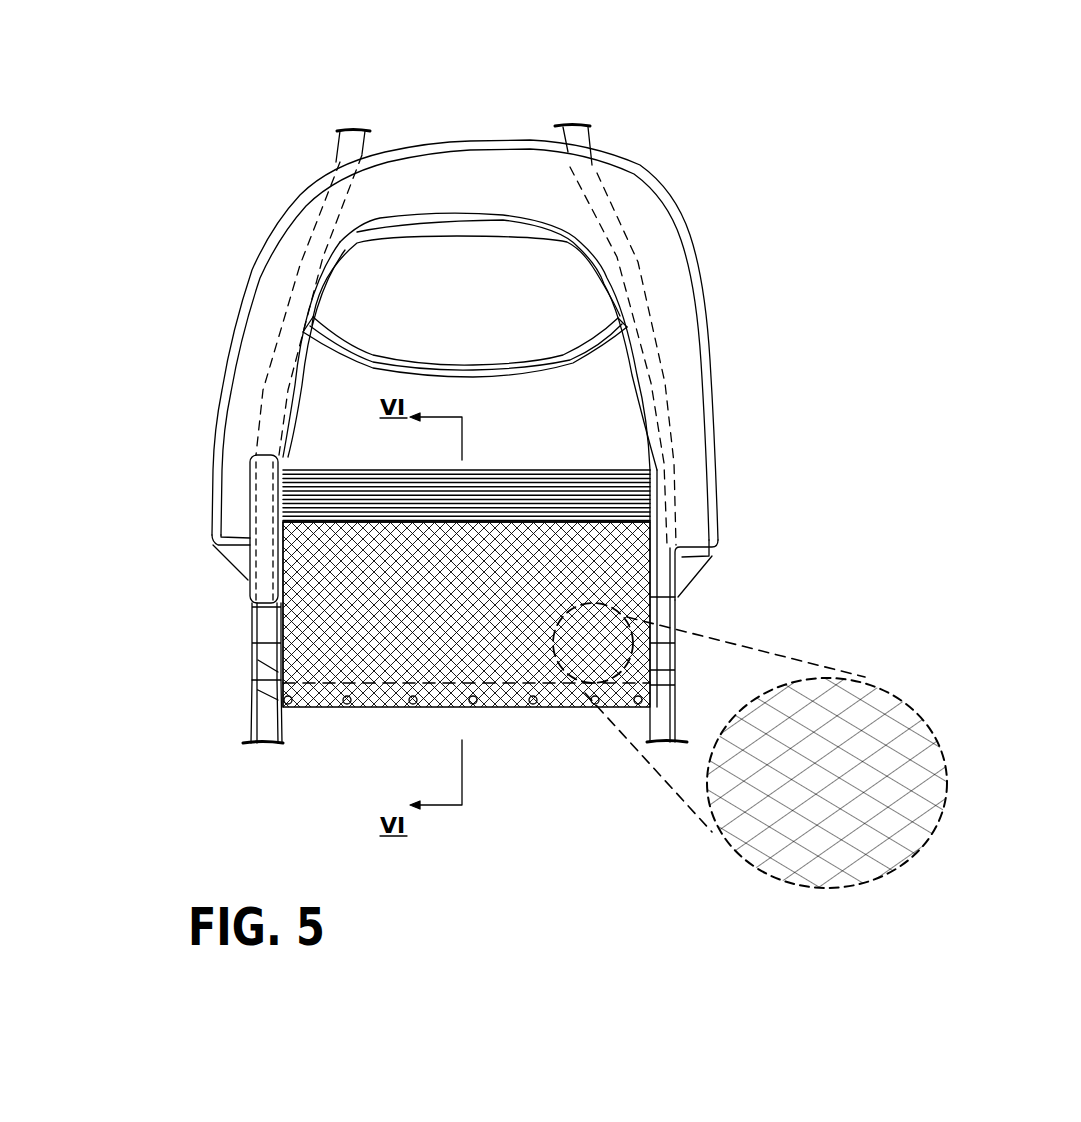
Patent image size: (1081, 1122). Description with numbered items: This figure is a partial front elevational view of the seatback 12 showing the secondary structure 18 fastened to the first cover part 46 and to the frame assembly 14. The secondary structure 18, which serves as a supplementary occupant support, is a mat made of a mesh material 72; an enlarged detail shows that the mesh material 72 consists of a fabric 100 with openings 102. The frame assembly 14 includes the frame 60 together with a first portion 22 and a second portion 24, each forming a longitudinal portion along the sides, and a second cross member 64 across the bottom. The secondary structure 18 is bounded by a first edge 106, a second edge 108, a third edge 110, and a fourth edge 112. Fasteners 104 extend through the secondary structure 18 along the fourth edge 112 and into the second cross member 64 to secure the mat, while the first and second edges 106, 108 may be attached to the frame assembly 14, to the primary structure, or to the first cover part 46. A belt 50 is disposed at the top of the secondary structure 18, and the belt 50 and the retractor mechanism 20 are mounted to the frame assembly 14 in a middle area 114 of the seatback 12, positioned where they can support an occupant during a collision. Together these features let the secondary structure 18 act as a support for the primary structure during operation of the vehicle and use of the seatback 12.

The seatback 12 is at (620, 247).
The frame assembly 14 is at (333, 148).
The frame 60 is at (592, 143).
The first cover part 46 is at (588, 388).
The middle area 114 is at (558, 465).
The belt 50 is at (593, 490).
The secondary structure 18 is at (480, 667).
The third edge 110 is at (340, 547).
The first edge 106 is at (303, 603).
The fourth edge 112 is at (550, 700).
The retractor mechanism 20 is at (267, 495).
The first portion 22 is at (252, 628).
The second cross member 64 is at (281, 655).
The second portion 24 is at (657, 610).
The fasteners 104 is at (288, 705).
The second edge 108 is at (643, 598).
The mesh material 72 is at (893, 735).
The fabric 100 is at (867, 710).
The openings 102 is at (880, 807).